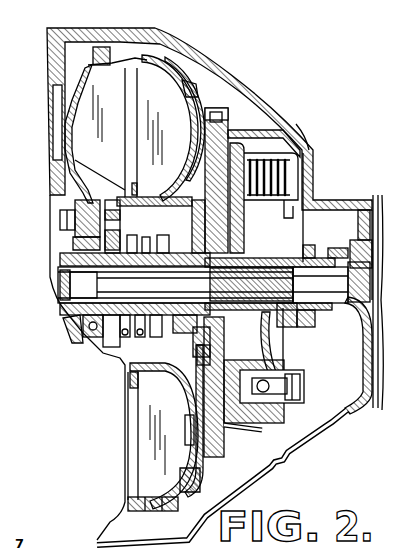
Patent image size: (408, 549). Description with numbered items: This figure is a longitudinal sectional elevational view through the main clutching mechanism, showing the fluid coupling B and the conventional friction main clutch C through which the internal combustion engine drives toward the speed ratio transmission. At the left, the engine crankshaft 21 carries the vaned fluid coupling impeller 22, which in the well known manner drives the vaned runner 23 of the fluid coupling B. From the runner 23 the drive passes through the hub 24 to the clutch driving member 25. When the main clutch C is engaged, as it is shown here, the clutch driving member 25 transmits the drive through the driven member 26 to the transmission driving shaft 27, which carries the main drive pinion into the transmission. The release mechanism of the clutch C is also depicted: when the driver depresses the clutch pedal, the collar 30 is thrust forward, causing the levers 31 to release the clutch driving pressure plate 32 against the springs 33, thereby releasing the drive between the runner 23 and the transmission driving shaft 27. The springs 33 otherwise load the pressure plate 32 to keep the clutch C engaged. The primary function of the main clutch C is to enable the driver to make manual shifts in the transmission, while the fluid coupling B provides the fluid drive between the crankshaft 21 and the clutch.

The engine crankshaft 21 is at (57, 242).
The fluid coupling impeller 22 is at (80, 103).
The runner 23 is at (188, 82).
The hub 24 is at (147, 285).
The clutch driving member 25 is at (226, 105).
The driven member 26 is at (228, 217).
The transmission driving shaft 27 is at (345, 308).
The collar 30 is at (312, 246).
The levers 31 is at (268, 343).
The clutch driving pressure plate 32 is at (266, 420).
The springs 33 is at (300, 128).
The fluid coupling B is at (162, 95).
The main clutch C is at (250, 157).